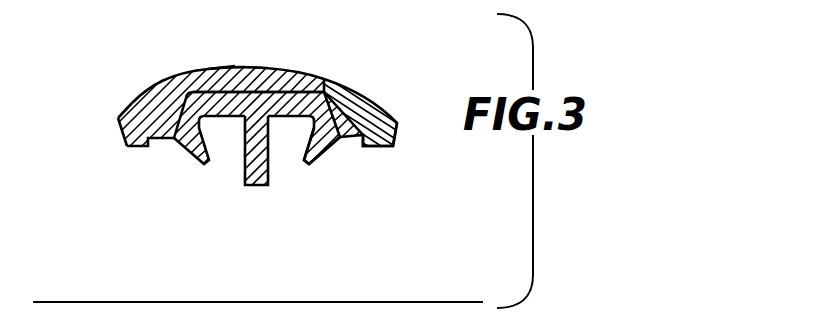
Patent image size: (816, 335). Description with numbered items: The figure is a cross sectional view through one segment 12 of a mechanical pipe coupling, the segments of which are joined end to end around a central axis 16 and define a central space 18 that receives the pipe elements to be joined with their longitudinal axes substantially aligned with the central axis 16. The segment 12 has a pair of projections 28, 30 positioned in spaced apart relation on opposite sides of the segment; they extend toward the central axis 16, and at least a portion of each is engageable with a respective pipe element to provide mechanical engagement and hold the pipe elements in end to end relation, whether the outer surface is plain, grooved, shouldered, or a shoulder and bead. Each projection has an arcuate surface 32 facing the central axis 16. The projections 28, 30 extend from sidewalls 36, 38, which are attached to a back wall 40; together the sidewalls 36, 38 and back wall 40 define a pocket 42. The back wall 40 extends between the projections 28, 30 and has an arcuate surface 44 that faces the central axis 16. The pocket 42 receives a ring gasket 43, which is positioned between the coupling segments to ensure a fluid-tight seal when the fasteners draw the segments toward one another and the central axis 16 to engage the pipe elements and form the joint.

The segment 12 is at (355, 82).
The central axis 16 is at (210, 301).
The central space 18 is at (278, 285).
The projection 28 is at (123, 137).
The projection 30 is at (388, 141).
The arcuate surface 32 is at (137, 147).
The sidewall 36 is at (148, 110).
The sidewall 38 is at (383, 112).
The back wall 40 is at (221, 68).
The pocket 42 is at (240, 91).
The ring gasket 43 is at (324, 150).
The arcuate surface 44 is at (292, 92).